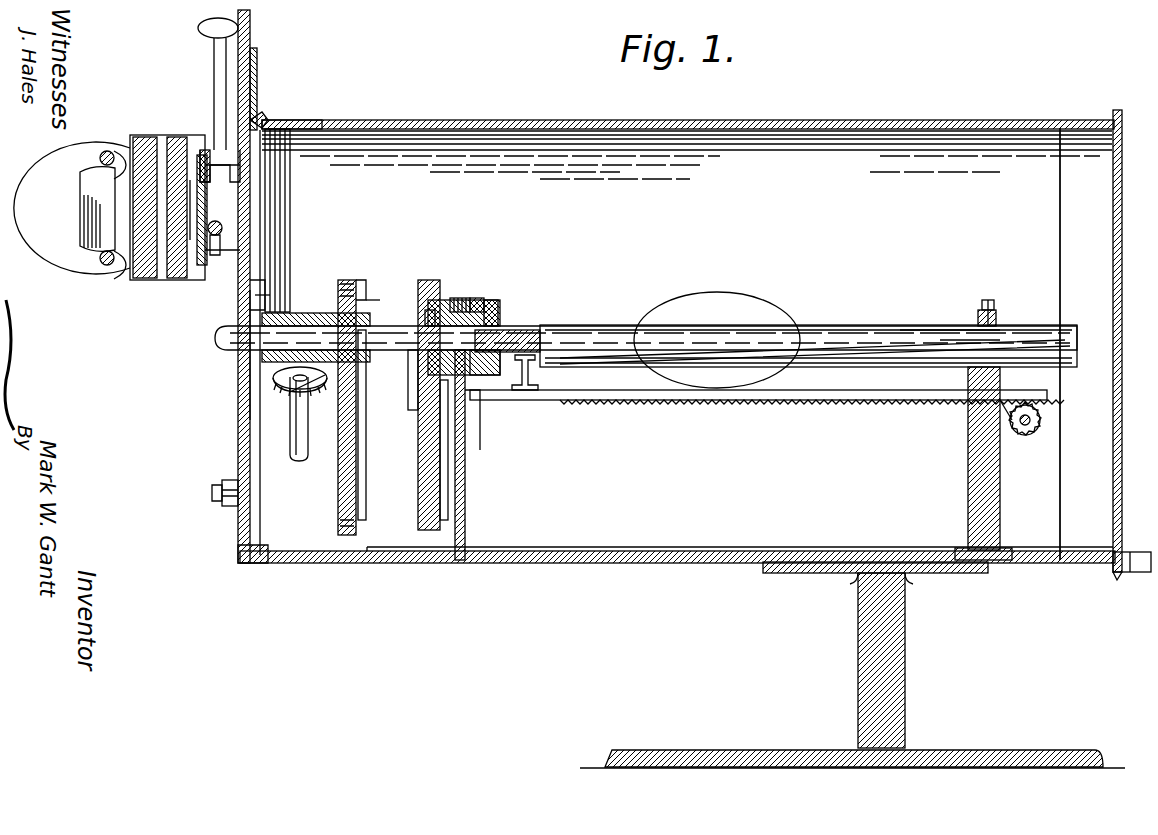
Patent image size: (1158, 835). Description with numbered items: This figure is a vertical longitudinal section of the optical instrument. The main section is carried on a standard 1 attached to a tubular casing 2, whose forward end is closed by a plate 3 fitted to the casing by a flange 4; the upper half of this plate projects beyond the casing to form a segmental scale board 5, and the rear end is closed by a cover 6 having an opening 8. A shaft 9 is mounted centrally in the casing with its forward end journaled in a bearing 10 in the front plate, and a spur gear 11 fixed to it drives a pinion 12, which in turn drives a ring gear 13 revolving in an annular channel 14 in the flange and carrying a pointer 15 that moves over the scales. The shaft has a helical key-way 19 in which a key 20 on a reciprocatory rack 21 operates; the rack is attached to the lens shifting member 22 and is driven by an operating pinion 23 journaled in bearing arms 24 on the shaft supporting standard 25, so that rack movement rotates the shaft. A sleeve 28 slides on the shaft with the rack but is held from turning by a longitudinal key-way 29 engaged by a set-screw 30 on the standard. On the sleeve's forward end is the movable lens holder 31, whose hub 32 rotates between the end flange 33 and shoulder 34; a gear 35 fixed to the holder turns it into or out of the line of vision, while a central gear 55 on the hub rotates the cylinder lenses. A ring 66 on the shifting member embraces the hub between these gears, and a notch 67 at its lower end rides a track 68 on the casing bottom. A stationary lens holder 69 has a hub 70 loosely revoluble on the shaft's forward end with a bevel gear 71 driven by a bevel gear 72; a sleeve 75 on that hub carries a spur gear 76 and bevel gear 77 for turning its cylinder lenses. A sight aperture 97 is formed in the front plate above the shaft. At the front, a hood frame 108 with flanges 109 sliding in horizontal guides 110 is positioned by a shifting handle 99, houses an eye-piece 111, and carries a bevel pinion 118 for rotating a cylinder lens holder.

The standard 1 is at (905, 622).
The tubular casing 2 is at (590, 565).
The plate 3 is at (240, 370).
The flange 4 is at (688, 254).
The segmental scale board 5 is at (216, 45).
The cover or closure 6 is at (1112, 236).
The opening 8 is at (1113, 362).
The shaft 9 is at (785, 330).
The bearing 10 is at (220, 330).
The spur gear 11 is at (288, 380).
The pinion 12 is at (240, 455).
The ring gear 13 is at (245, 555).
The annular channel 14 is at (290, 120).
The pointer or hand 15 is at (257, 70).
The helical groove or key-way 19 is at (880, 352).
The key or projection 20 is at (537, 375).
The reciprocatory rack 21 is at (845, 385).
The lens shifting member 22 is at (468, 468).
The operating pinion 23 is at (1027, 437).
The bearing arms 24 is at (1012, 425).
The shaft supporting standard 25 is at (970, 486).
The sleeve 28 is at (915, 330).
The longitudinal key-way 29 is at (945, 330).
The set-screw 30 is at (998, 312).
The movable lens holder 31 is at (430, 392).
The hub 32 is at (488, 312).
The end flange 33 is at (430, 318).
The shoulder 34 is at (498, 318).
The gear 35 is at (480, 302).
The central gear 55 is at (458, 300).
The ring 66 is at (468, 300).
The notch 67 is at (470, 555).
The track 68 is at (700, 560).
The stationary lens holder 69 is at (345, 410).
The hub or sleeve 70 is at (290, 318).
The bevel gear 71 is at (262, 285).
The bevel gear 72 is at (290, 395).
The sleeve 75 is at (270, 300).
The spur gear 76 is at (375, 298).
The bevel gear 77 is at (362, 285).
The sight aperture 97 is at (248, 212).
The shifting handle 99 is at (198, 28).
The frame 108 is at (200, 140).
The flanges 109 is at (262, 118).
The horizontal guides 110 is at (228, 135).
The eye-piece 111 is at (82, 215).
The bevel pinion 118 is at (222, 228).